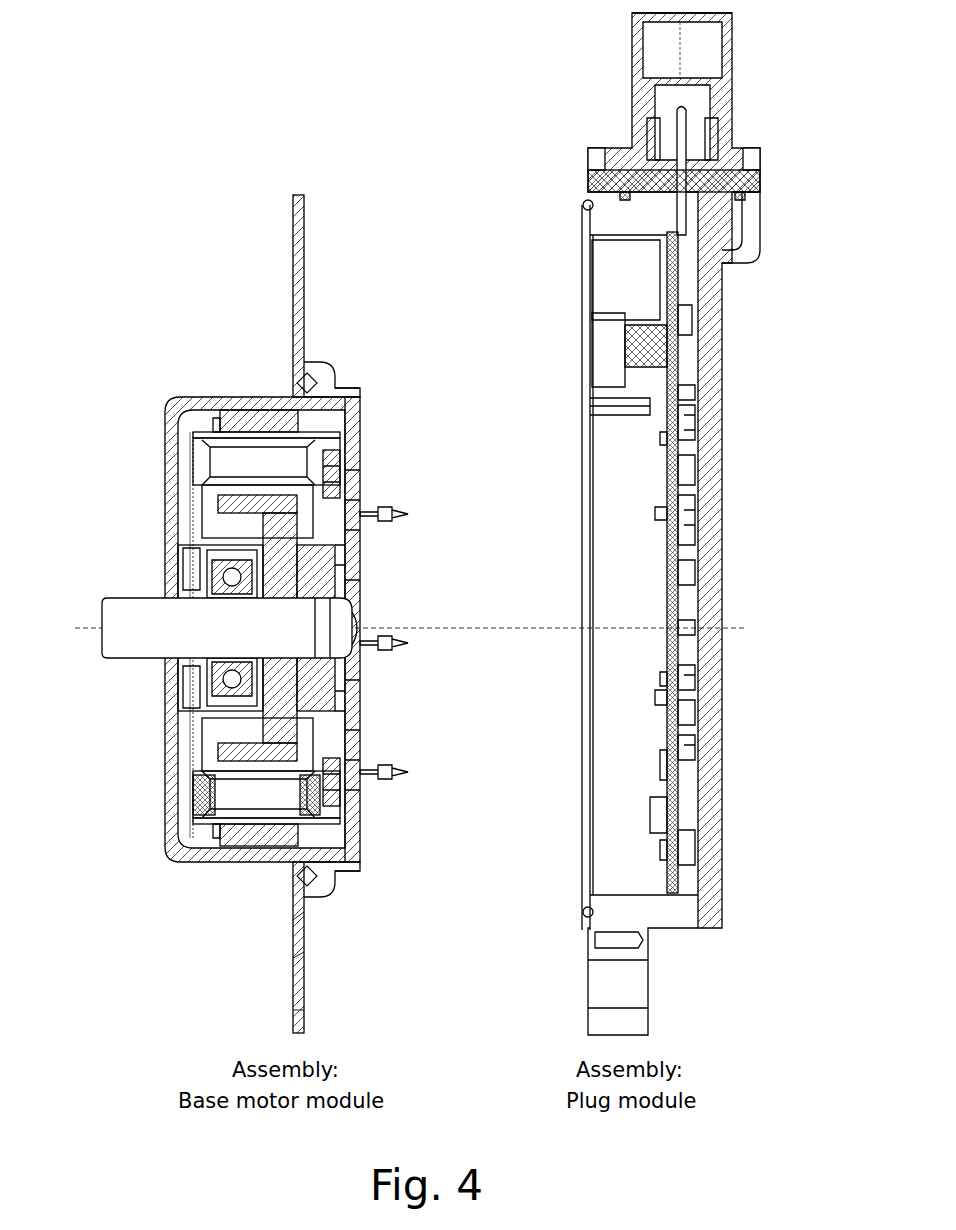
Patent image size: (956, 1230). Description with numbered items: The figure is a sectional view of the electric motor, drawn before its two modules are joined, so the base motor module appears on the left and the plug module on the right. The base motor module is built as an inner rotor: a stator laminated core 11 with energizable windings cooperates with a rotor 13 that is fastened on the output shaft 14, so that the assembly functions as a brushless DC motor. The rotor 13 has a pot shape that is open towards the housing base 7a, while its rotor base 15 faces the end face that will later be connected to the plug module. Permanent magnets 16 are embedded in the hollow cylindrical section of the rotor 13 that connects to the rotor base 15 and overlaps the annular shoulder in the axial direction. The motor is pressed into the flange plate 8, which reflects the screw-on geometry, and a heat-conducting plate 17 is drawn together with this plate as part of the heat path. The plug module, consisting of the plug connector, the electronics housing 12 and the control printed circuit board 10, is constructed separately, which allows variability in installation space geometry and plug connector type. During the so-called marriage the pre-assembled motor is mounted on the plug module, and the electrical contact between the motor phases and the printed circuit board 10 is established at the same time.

The housing base 7a is at (165, 785).
The flange plate 8 is at (293, 255).
The heat-conducting plate 17 is at (328, 629).
The printed circuit board 10 is at (722, 530).
The stator laminated core 11 is at (165, 428).
The electronics housing 12 is at (722, 340).
The rotor 13 is at (178, 545).
The output shaft 14 is at (162, 635).
The rotor base 15 is at (283, 680).
The permanent magnet 16 is at (320, 455).